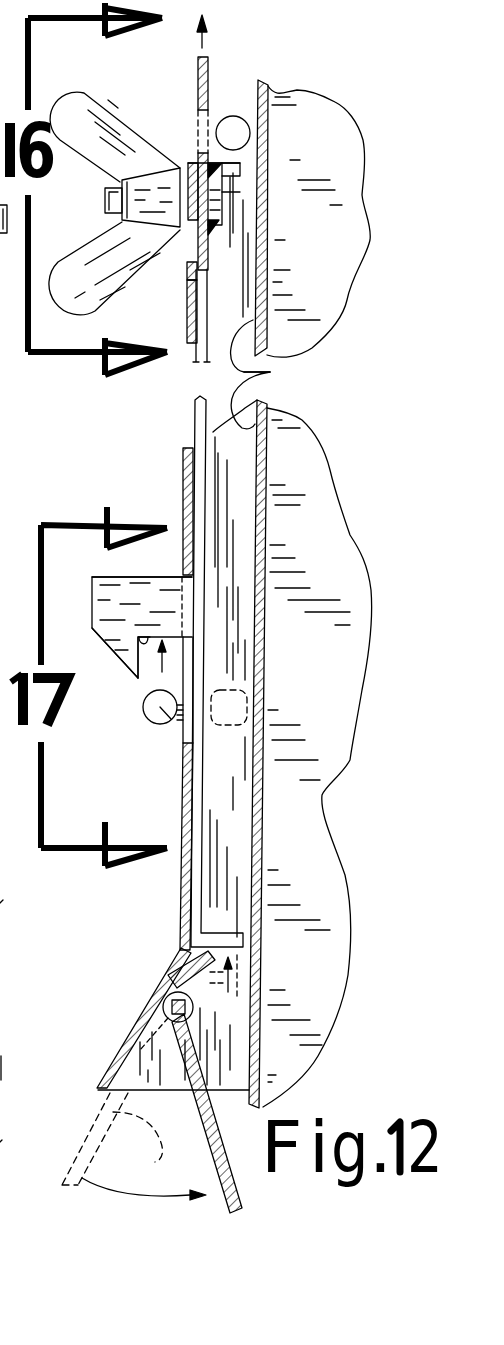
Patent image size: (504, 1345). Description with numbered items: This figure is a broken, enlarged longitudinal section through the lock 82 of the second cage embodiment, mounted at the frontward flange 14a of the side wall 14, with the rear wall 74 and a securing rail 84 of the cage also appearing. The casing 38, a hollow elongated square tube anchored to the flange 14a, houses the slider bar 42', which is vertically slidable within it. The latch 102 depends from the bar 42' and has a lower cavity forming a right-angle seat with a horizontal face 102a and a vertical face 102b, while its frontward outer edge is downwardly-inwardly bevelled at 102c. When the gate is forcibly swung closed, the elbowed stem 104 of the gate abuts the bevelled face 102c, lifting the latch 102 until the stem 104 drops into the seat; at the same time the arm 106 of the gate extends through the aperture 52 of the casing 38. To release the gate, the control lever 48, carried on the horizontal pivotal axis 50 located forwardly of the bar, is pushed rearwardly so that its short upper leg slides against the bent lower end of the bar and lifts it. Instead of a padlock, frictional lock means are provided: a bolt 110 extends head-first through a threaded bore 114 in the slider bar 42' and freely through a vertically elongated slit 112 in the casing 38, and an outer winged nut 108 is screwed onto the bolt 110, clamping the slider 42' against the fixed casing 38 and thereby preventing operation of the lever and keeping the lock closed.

The side wall 14 is at (328, 246).
The frontward flange of the side wall 14a is at (270, 372).
The casing 38 is at (186, 330).
The slider bar 42' is at (188, 555).
The control lever 48 is at (210, 1137).
The pivotal axis 50 is at (172, 990).
The aperture of the casing 52 is at (198, 120).
The rear wall 74 is at (0, 903).
The lock 82 is at (180, 910).
The rail 84 is at (0, 1142).
The latch 102 is at (95, 595).
The horizontal face of the latch seat 102a is at (157, 633).
The vertical face of the latch seat 102b is at (140, 677).
The bevelled edge of the latch 102c is at (100, 655).
The elbowed stem 104 is at (170, 725).
The arm 106 is at (235, 117).
The winged nut 108 is at (78, 113).
The bolt 110 is at (224, 200).
The slit 112 is at (193, 272).
The threaded bore 114 is at (212, 172).